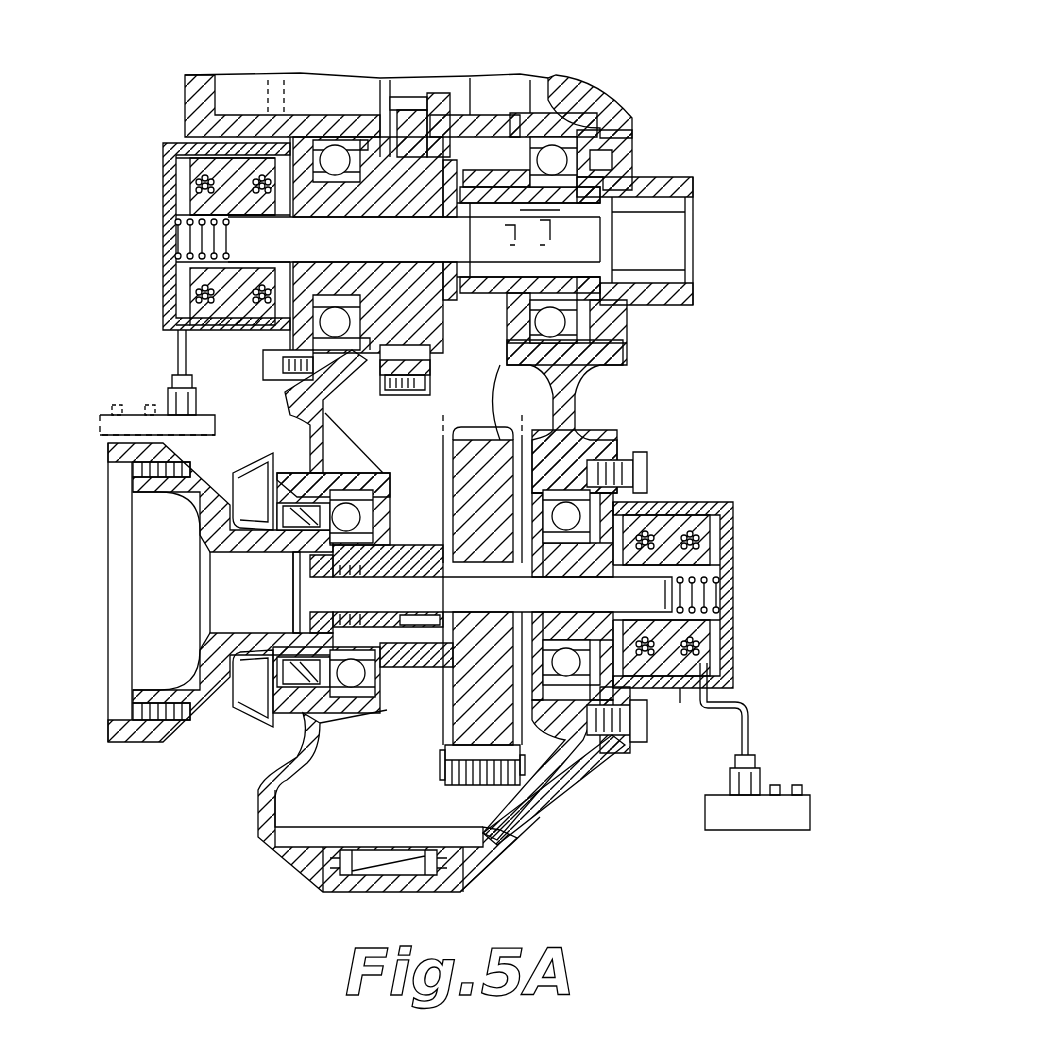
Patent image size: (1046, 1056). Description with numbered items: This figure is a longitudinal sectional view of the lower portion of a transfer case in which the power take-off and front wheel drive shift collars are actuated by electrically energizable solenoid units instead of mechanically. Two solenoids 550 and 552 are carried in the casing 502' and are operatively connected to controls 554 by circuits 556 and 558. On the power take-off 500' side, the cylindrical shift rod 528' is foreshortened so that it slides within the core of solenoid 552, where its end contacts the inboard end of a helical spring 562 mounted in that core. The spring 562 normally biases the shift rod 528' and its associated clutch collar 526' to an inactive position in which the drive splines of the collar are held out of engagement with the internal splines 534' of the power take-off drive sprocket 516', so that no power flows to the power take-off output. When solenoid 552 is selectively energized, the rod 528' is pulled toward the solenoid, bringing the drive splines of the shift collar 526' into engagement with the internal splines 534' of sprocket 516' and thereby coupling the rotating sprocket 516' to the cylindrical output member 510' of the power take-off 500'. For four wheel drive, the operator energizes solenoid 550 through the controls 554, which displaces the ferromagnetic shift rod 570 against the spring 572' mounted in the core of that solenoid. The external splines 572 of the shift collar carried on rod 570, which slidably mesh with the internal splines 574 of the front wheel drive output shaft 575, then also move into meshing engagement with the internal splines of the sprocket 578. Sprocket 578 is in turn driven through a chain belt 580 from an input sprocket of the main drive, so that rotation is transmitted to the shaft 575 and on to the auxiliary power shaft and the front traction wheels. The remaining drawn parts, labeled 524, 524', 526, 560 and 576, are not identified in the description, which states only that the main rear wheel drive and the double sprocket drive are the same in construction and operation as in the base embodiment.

The power take-off 500' is at (699, 140).
The casing 502' is at (433, 124).
The cylindrical output member 510' is at (662, 265).
The power take-off drive sprocket 516' is at (443, 418).
The lower gear 524 is at (471, 465).
The bolt 524' is at (387, 92).
The upper shaft 526 is at (339, 245).
The clutch collar 526' is at (528, 205).
The cylindrical shift rod 528' is at (531, 251).
The internal splines 534' is at (392, 220).
The solenoid 550 is at (680, 530).
The solenoid 552 is at (163, 165).
The controls 554 is at (140, 425).
The circuit 556 is at (745, 708).
The circuit 558 is at (178, 348).
The coil winding 560 is at (268, 175).
The helical spring 562 is at (178, 236).
The ferromagnetic shift rod 570 is at (682, 692).
The external splines 572 is at (363, 593).
The spring 572' is at (753, 595).
The internal splines 574 is at (409, 628).
The front wheel drive output shaft 575 is at (175, 512).
The lower shaft 576 is at (455, 625).
The sprocket 578 is at (548, 737).
The chain belt 580 is at (495, 783).